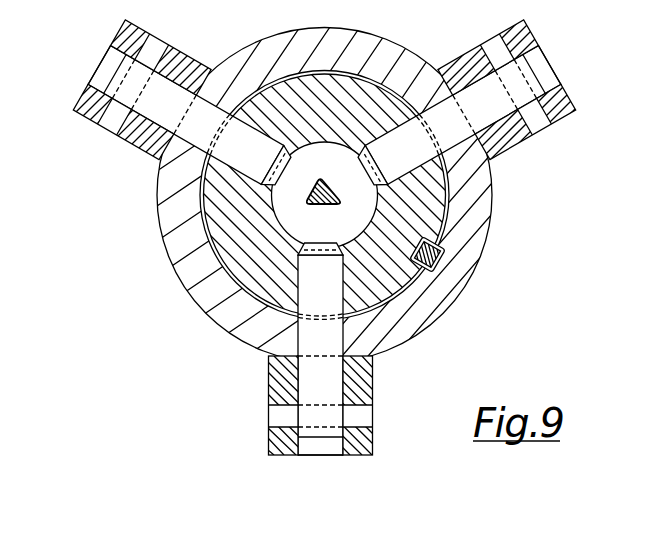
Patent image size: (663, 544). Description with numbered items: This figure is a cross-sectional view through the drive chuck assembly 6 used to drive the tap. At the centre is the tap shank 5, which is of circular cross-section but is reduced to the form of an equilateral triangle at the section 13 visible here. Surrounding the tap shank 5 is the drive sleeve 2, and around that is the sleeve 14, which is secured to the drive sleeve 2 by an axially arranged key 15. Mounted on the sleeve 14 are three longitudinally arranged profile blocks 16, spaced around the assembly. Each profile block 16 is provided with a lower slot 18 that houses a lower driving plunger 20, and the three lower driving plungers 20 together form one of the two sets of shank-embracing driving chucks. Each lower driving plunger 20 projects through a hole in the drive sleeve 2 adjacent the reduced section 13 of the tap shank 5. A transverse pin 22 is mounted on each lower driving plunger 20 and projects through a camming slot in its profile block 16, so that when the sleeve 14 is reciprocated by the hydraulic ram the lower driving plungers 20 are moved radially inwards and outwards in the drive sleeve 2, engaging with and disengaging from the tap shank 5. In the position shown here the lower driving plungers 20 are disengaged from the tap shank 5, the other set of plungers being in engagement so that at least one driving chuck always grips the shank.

The drive sleeve 2 is at (240, 270).
The tap shank 5 is at (311, 190).
The drive chuck assembly 6 is at (336, 252).
The reduced section of the tap shank 13 is at (327, 208).
The sleeve 14 is at (178, 245).
The key 15 is at (446, 257).
The profile block 16 is at (152, 150).
The lower slot 18 is at (108, 72).
The lower driving plunger 20 is at (225, 114).
The transverse pin 22 is at (153, 44).